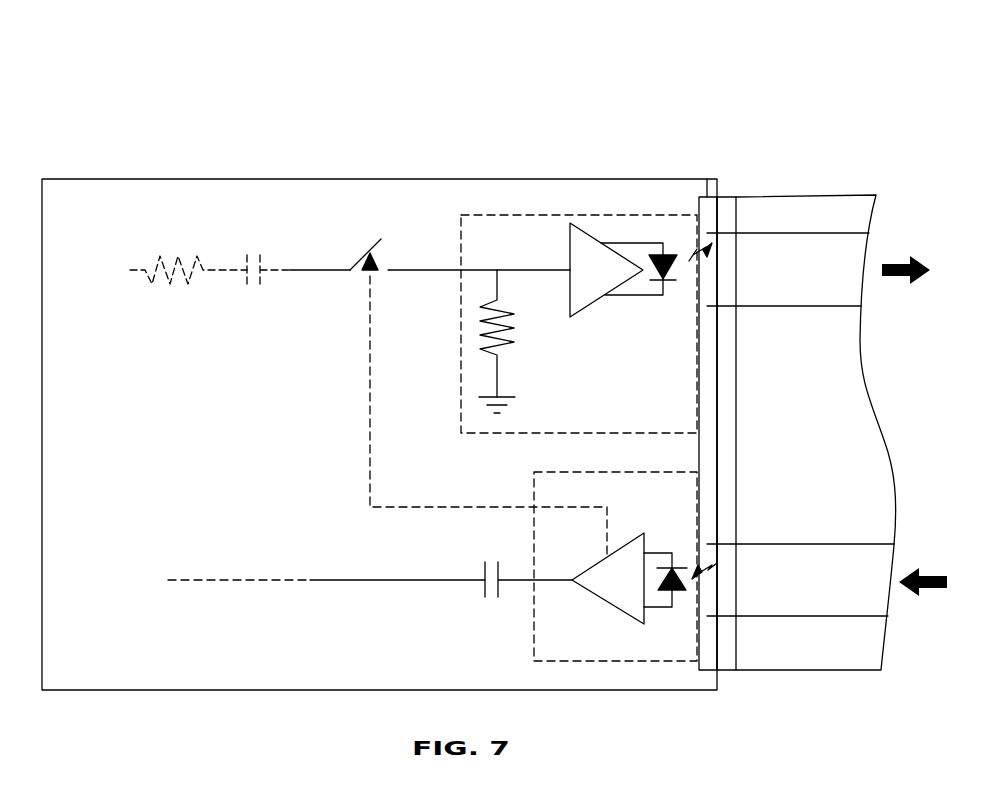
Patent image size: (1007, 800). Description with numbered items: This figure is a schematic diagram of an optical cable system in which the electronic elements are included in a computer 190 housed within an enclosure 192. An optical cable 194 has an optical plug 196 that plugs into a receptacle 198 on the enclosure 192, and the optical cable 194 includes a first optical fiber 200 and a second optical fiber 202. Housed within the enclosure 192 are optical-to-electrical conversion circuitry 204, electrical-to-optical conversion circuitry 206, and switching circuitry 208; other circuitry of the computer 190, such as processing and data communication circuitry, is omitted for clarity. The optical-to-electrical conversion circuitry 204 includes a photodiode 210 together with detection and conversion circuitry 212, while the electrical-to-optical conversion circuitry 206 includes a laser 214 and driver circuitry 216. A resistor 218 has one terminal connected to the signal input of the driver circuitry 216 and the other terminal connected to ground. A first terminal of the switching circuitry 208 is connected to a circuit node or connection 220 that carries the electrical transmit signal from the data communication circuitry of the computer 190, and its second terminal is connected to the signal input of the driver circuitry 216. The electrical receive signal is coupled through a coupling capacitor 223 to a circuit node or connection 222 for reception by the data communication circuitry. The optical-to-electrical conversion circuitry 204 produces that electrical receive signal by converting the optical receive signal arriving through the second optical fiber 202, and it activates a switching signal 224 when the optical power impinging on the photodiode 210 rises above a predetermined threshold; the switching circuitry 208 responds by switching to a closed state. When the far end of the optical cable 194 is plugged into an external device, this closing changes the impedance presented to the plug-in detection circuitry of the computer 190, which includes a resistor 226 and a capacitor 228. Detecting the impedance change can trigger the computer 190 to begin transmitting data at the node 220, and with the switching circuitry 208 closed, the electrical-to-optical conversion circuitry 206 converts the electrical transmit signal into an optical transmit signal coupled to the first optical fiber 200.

The computer 190 is at (580, 90).
The enclosure 192 is at (285, 179).
The optical cable 194 is at (850, 195).
The optical plug 196 is at (727, 195).
The receptacle 198 is at (707, 178).
The first optical fiber 200 is at (827, 307).
The second optical fiber 202 is at (825, 544).
The optical-to-electrical conversion circuitry 204 is at (620, 663).
The electrical-to-optical conversion circuitry 206 is at (498, 214).
The switching circuitry 208 is at (366, 254).
The photodiode 210 is at (678, 592).
The detection and conversion circuitry 212 is at (603, 602).
The laser 214 is at (678, 268).
The driver circuitry 216 is at (590, 305).
The resistor 218 is at (510, 353).
The circuit node or connection 220 is at (312, 269).
The circuit node or connection 222 is at (335, 582).
The coupling capacitor 223 is at (493, 600).
The switching signal 224 is at (413, 506).
The resistor 226 is at (172, 288).
The capacitor 228 is at (254, 289).